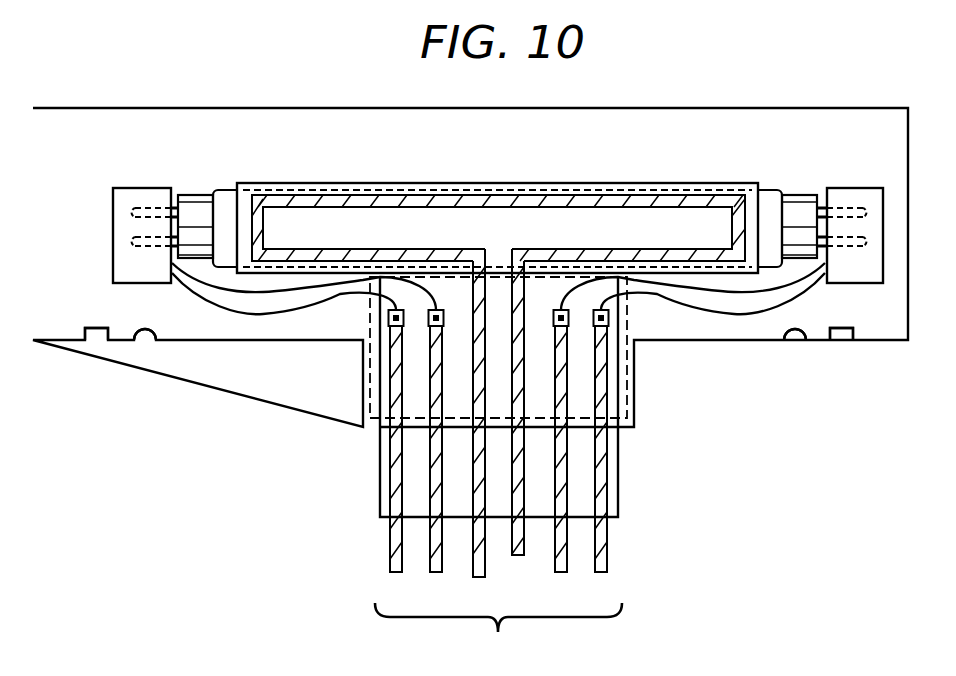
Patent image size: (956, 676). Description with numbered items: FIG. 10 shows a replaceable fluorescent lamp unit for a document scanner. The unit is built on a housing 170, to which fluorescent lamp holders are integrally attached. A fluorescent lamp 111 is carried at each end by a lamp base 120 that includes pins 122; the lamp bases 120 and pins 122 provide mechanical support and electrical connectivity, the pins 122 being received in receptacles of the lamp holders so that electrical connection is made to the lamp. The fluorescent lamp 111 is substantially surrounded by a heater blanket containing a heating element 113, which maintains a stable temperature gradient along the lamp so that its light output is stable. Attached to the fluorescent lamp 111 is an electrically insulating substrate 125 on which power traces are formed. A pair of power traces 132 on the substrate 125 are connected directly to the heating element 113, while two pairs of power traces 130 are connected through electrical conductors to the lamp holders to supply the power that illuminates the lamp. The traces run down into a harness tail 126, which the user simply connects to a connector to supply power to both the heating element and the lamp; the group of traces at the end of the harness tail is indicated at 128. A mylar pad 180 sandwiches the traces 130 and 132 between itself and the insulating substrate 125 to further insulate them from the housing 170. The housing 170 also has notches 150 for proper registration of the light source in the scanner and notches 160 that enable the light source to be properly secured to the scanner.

The housing 170 is at (80, 116).
The pins 122 is at (131, 240).
The lamp bases 120 is at (195, 203).
The fluorescent lamp 111 is at (227, 190).
The heating element 113 is at (418, 192).
The electrically insulating substrate 125 is at (638, 184).
The notches 150 is at (108, 331).
The notches 160 is at (137, 333).
The mylar pad 180 is at (628, 395).
The harness tail 126 is at (618, 452).
The power traces 130 is at (437, 490).
The power traces 132 is at (518, 553).
The lead group 128 is at (498, 636).